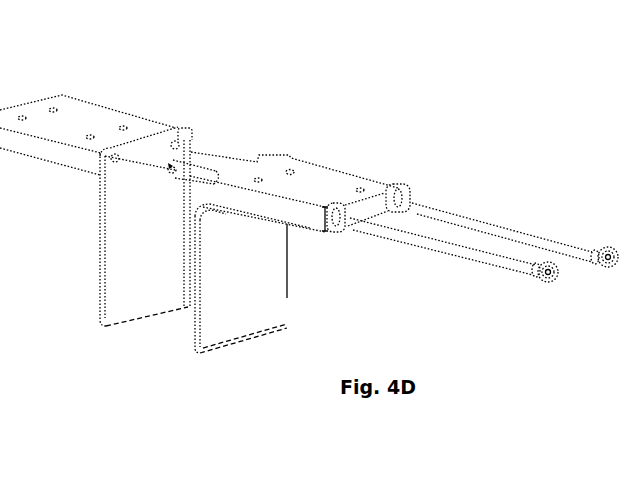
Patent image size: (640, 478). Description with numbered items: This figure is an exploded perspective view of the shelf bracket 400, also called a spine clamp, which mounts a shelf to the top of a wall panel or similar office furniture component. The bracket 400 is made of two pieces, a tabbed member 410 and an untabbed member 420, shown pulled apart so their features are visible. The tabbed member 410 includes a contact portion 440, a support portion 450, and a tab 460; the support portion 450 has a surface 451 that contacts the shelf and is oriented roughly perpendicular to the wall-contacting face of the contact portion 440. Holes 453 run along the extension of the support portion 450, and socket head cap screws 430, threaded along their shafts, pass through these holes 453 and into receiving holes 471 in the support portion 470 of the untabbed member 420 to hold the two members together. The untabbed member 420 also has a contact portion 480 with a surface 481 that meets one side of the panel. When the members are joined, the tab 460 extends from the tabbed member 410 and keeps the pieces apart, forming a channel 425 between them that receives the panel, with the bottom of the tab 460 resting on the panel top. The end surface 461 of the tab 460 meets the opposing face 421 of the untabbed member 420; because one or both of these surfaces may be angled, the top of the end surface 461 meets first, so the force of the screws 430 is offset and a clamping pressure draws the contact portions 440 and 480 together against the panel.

The shelf bracket 400 is at (442, 321).
The tabbed member 410 is at (278, 293).
The untabbed member 420 is at (119, 229).
The opposing face 421 is at (152, 150).
The channel 425 is at (156, 369).
The screws 430 is at (484, 265).
The contact portion 440 is at (251, 298).
The support portion 450 is at (345, 159).
The surface 451 is at (298, 170).
The holes 453 is at (402, 193).
The tab 460 is at (205, 151).
The end surface 461 is at (168, 168).
The support portion 470 is at (78, 123).
The receiving holes 471 is at (162, 120).
The contact portion 480 is at (152, 223).
The surface 481 is at (159, 276).